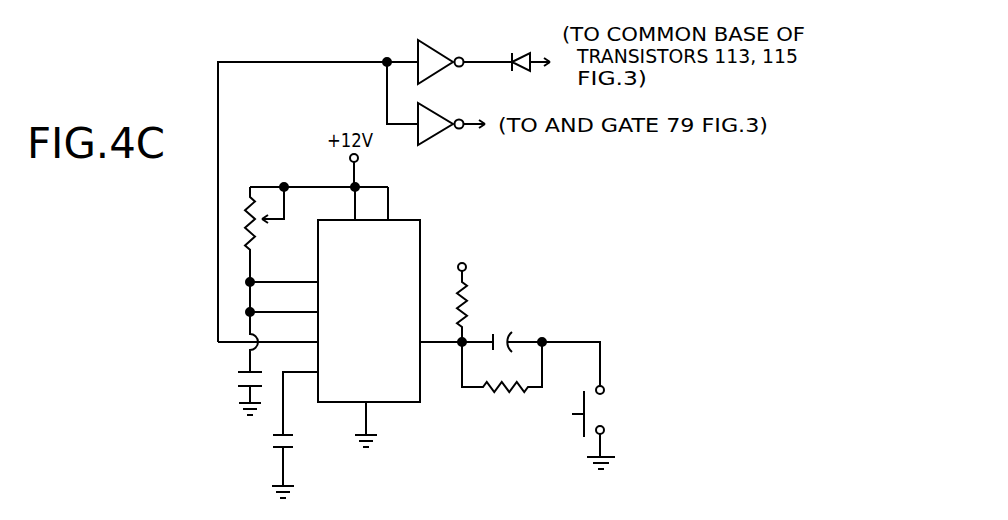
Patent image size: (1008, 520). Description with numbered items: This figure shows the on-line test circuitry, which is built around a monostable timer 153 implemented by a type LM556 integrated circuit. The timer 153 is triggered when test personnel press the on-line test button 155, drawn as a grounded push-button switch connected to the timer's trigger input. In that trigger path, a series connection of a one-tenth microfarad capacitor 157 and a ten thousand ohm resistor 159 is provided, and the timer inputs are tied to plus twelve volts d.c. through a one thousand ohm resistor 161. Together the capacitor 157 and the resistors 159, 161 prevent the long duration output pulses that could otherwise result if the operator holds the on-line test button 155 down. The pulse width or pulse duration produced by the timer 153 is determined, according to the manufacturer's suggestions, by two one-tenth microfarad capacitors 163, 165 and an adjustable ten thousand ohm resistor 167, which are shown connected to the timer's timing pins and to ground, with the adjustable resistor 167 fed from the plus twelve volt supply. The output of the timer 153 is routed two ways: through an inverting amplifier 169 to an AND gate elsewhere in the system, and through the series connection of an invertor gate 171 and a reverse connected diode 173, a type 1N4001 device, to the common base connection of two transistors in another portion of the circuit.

The monostable timer 153 is at (422, 226).
The on-line test button 155 is at (597, 414).
The capacitor 157 is at (512, 342).
The resistor 159 is at (485, 392).
The resistor 161 is at (468, 294).
The capacitor 163 is at (268, 445).
The capacitor 165 is at (232, 388).
The adjustable resistor 167 is at (240, 222).
The inverting amplifier 169 is at (452, 140).
The invertor gate 171 is at (435, 40).
The reverse connected diode 173 is at (512, 58).